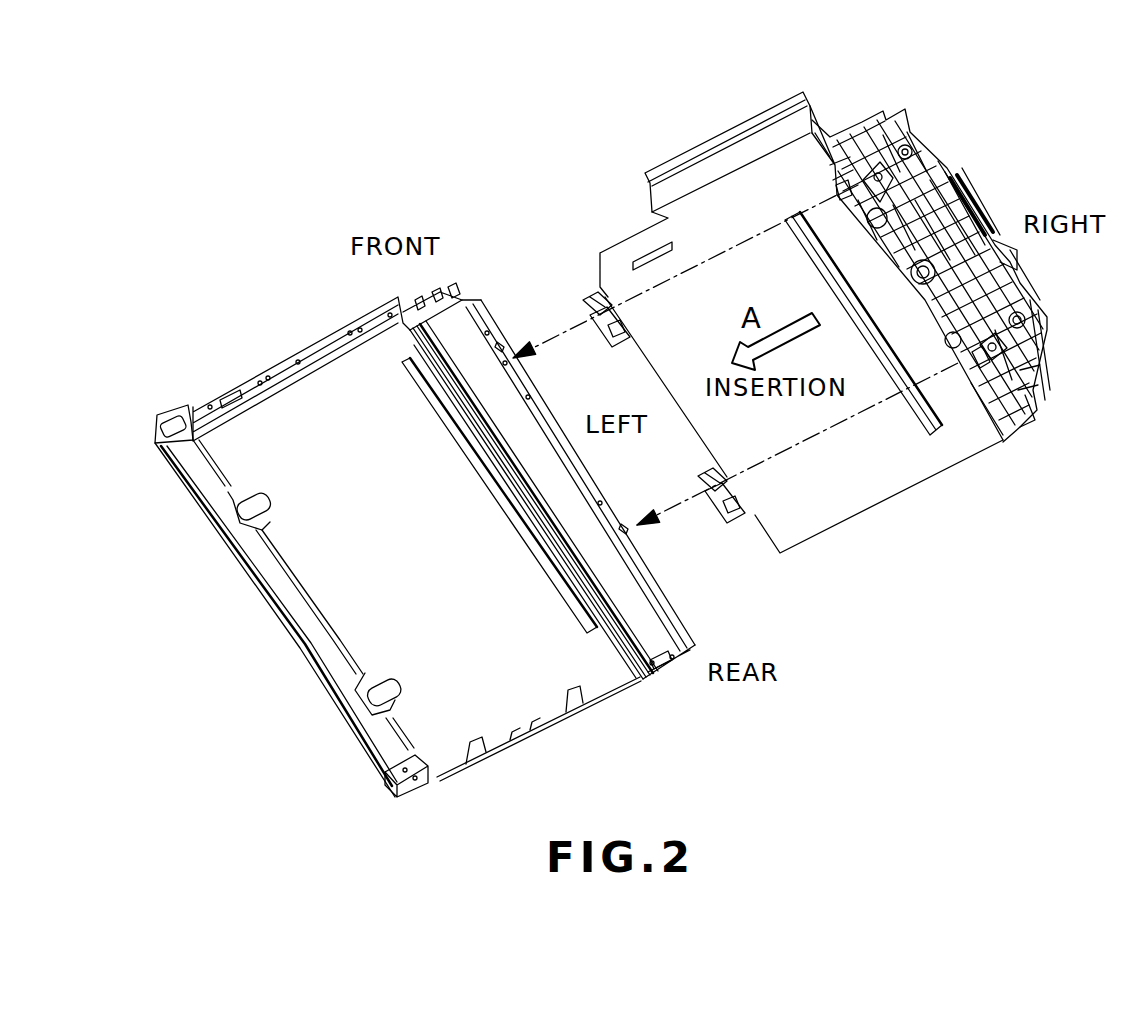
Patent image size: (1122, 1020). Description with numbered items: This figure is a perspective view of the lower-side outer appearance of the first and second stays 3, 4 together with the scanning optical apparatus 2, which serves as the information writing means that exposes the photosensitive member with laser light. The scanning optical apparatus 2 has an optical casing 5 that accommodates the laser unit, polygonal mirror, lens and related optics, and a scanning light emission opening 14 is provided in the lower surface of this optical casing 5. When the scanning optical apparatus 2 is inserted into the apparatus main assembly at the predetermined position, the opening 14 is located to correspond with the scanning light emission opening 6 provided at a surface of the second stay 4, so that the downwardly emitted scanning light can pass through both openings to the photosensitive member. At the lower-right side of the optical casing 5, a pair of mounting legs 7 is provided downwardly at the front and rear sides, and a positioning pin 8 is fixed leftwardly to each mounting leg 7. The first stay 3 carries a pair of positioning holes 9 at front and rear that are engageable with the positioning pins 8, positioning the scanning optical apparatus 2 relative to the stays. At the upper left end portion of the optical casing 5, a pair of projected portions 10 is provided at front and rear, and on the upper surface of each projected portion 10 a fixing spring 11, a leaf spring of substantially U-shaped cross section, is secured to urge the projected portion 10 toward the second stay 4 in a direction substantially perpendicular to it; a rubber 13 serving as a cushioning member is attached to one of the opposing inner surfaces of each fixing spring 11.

The scanning optical apparatus 2 is at (958, 487).
The first stay 3 is at (460, 337).
The second stay 4 is at (300, 413).
The optical casing 5 is at (857, 507).
The scanning light emission opening 6 is at (513, 520).
The mounting leg 7 is at (858, 168).
The positioning pin 8 is at (838, 190).
The positioning hole 9 is at (500, 345).
The projected portion 10 is at (620, 343).
The fixing spring 11 is at (583, 308).
The rubber 13 is at (603, 300).
The scanning light emission opening 14 is at (818, 260).